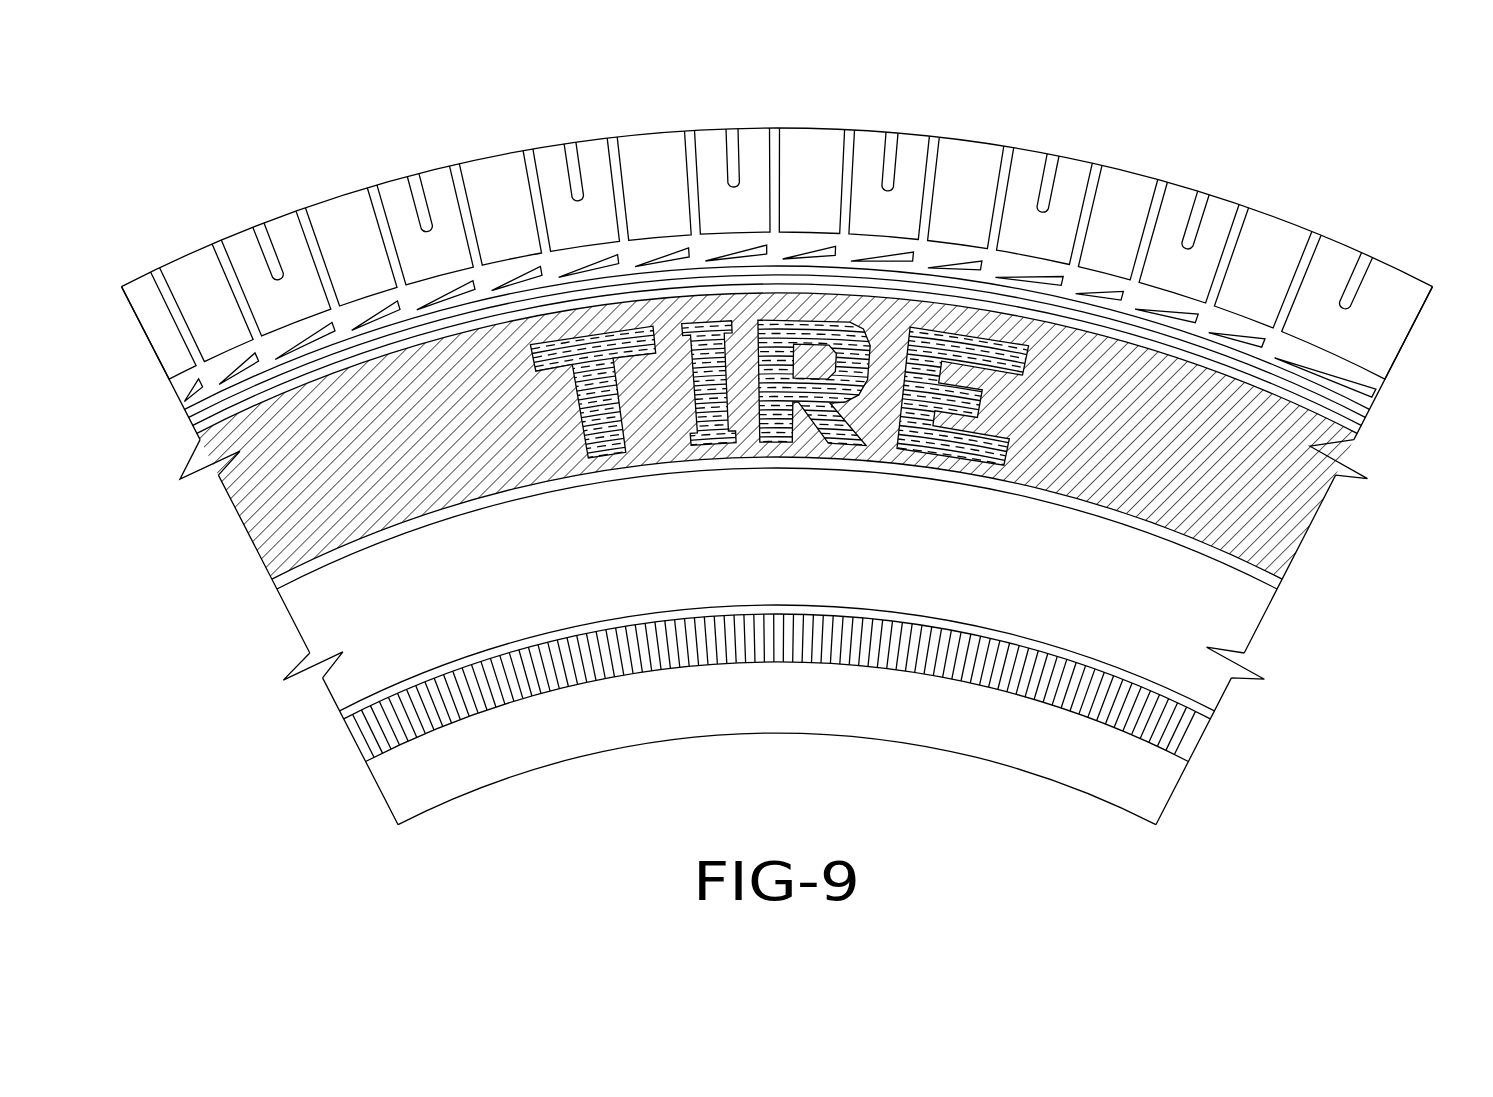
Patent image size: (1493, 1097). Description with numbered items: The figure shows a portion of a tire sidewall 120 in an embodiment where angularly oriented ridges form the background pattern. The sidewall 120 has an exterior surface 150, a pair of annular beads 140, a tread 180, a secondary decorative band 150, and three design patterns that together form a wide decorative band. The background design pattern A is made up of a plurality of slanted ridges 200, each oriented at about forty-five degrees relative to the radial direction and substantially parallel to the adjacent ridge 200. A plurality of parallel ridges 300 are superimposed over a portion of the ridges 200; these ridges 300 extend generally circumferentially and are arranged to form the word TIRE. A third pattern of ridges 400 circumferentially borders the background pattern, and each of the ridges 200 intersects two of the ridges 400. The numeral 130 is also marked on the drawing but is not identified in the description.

The tire sidewall 120 is at (325, 605).
The belt layer 130 is at (1198, 664).
The annular beads 140 is at (1192, 793).
The exterior surface 150 is at (1192, 740).
The tread 180 is at (1192, 184).
The slanted ridges 200 is at (270, 508).
The parallel ridges 300 is at (577, 338).
The third pattern of ridges 400 is at (1362, 416).